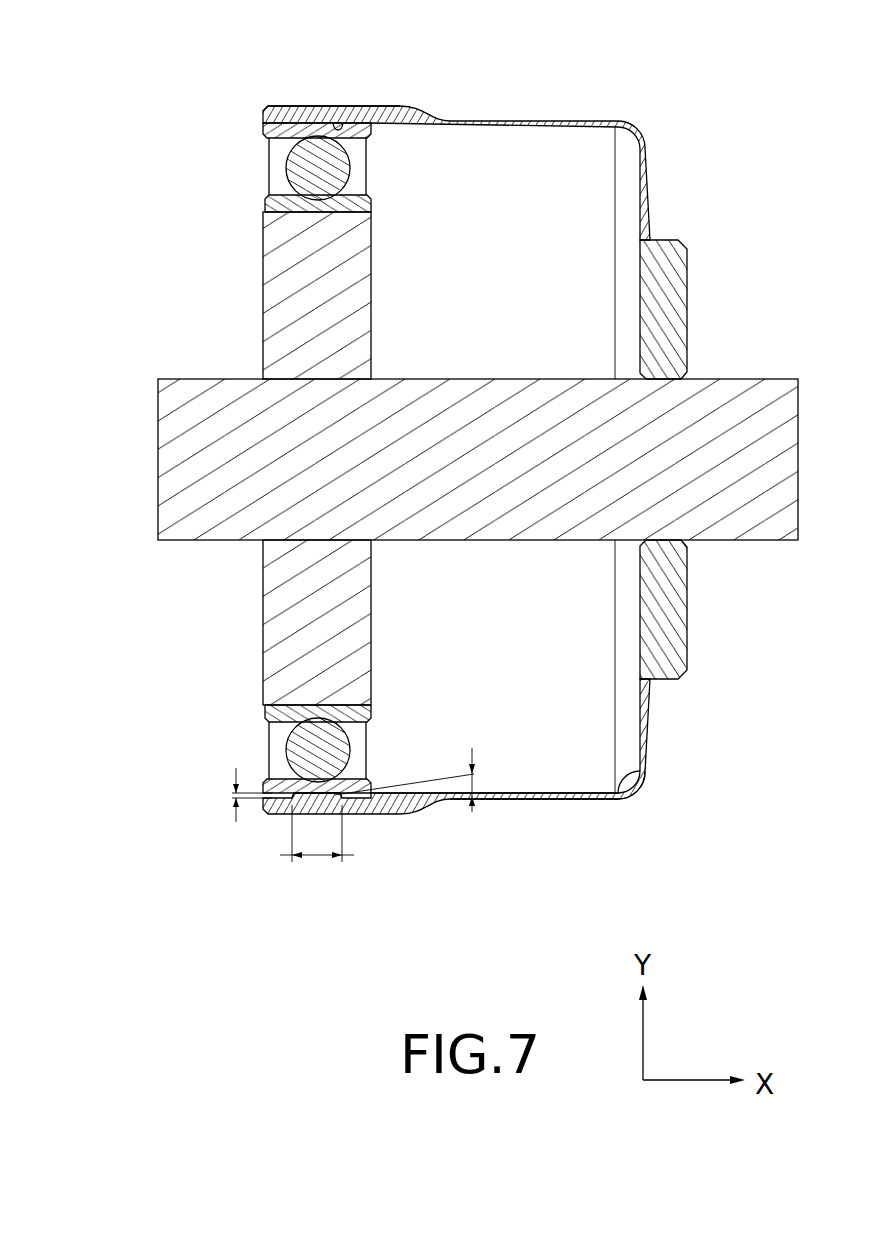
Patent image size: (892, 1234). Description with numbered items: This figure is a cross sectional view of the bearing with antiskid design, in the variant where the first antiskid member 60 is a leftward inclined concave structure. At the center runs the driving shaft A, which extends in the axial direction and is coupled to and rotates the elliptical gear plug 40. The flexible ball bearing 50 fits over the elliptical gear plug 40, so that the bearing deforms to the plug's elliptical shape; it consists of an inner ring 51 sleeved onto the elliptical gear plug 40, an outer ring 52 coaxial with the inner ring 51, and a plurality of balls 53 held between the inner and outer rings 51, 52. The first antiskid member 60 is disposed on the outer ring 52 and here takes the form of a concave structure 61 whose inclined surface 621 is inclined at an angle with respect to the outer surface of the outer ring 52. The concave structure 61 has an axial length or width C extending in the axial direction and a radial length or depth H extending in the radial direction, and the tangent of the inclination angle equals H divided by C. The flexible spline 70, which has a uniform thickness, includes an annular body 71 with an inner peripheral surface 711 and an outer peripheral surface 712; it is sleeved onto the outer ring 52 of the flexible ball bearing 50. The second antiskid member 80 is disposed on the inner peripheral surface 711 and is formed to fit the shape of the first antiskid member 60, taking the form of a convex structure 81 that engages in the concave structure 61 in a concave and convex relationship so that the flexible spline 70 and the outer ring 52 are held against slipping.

The driving shaft A is at (142, 452).
The elliptical gear plug 40 is at (247, 314).
The flexible ball bearing 50 is at (235, 443).
The inner ring 51 is at (290, 205).
The outer ring 52 is at (278, 131).
The balls 53 is at (313, 168).
The first antiskid member 60 is at (391, 109).
The concave structure 61 is at (331, 146).
The inclined surface 621 is at (313, 793).
The flexible spline 70 is at (454, 458).
The annular body 71 is at (548, 800).
The inner peripheral surface 711 is at (584, 792).
The outer peripheral surface 712 is at (520, 801).
The second antiskid member 80 is at (342, 64).
The convex structure 81 is at (336, 107).
The radial length (depth) H is at (239, 793).
The axial length (width) C is at (317, 833).